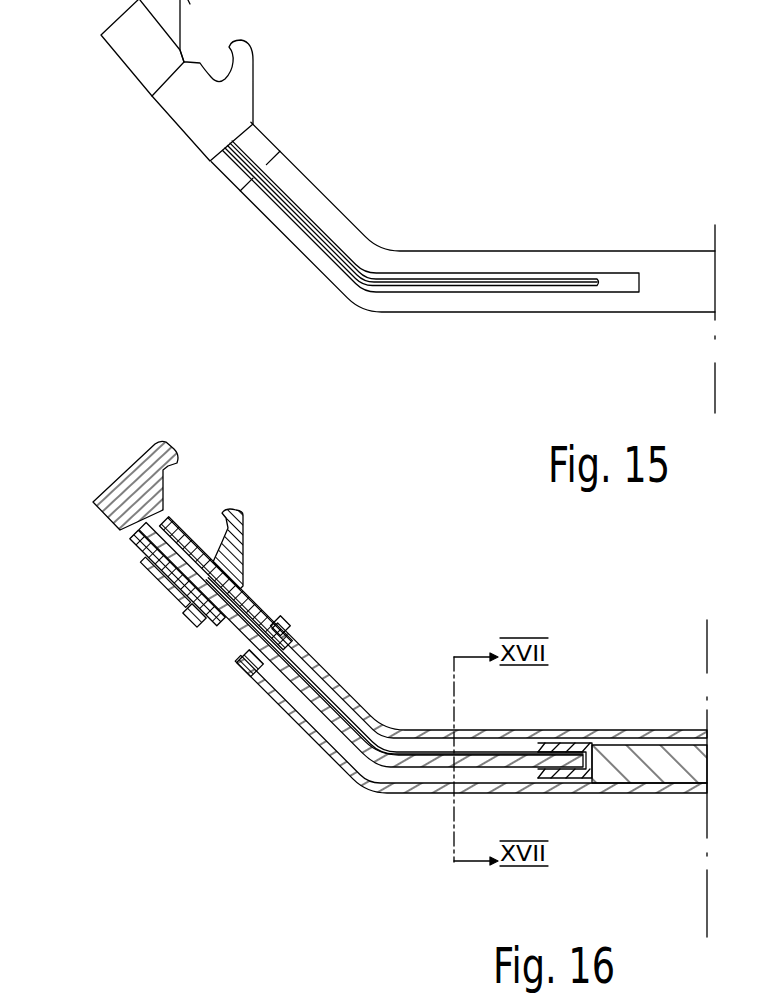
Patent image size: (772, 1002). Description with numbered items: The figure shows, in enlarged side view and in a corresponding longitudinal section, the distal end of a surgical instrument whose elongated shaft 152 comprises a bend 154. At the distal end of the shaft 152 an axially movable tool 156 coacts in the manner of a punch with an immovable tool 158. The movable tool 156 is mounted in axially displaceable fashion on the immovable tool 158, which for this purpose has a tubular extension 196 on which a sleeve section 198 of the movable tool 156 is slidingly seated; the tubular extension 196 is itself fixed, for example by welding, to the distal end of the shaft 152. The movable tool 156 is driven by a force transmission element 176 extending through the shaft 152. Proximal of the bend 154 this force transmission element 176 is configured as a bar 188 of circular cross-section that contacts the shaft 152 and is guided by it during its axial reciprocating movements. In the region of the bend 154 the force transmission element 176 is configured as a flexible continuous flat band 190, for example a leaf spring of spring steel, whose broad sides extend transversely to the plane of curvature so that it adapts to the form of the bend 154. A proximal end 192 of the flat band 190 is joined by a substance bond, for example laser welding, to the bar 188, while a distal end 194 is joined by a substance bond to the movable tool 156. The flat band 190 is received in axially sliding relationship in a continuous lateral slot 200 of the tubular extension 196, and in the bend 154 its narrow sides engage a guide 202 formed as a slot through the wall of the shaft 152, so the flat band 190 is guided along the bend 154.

In FIG. 15, the shaft 152 is at (664, 293).
In FIG. 16, the shaft 152 is at (620, 730).
In FIG. 15, the bend 154 is at (398, 212).
In FIG. 16, the bend 154 is at (395, 695).
In FIG. 15, the movable tool 156 is at (225, 97).
In FIG. 16, the movable tool 156 is at (237, 557).
In FIG. 15, the immovable tool 158 is at (135, 34).
In FIG. 16, the immovable tool 158 is at (113, 507).
In FIG. 16, the force transmission element 176 is at (665, 800).
In FIG. 16, the bar 188 is at (627, 765).
In FIG. 15, the flat band 190 is at (373, 283).
In FIG. 16, the flat band 190 is at (347, 742).
In FIG. 16, the proximal end 192 is at (574, 742).
In FIG. 16, the distal end 194 is at (185, 618).
In FIG. 16, the tubular extension 196 is at (221, 632).
In FIG. 16, the sleeve section 198 is at (160, 580).
In FIG. 16, the lateral slot 200 is at (168, 558).
In FIG. 15, the guide 202 is at (608, 280).
In FIG. 16, the guide 202 is at (394, 666).